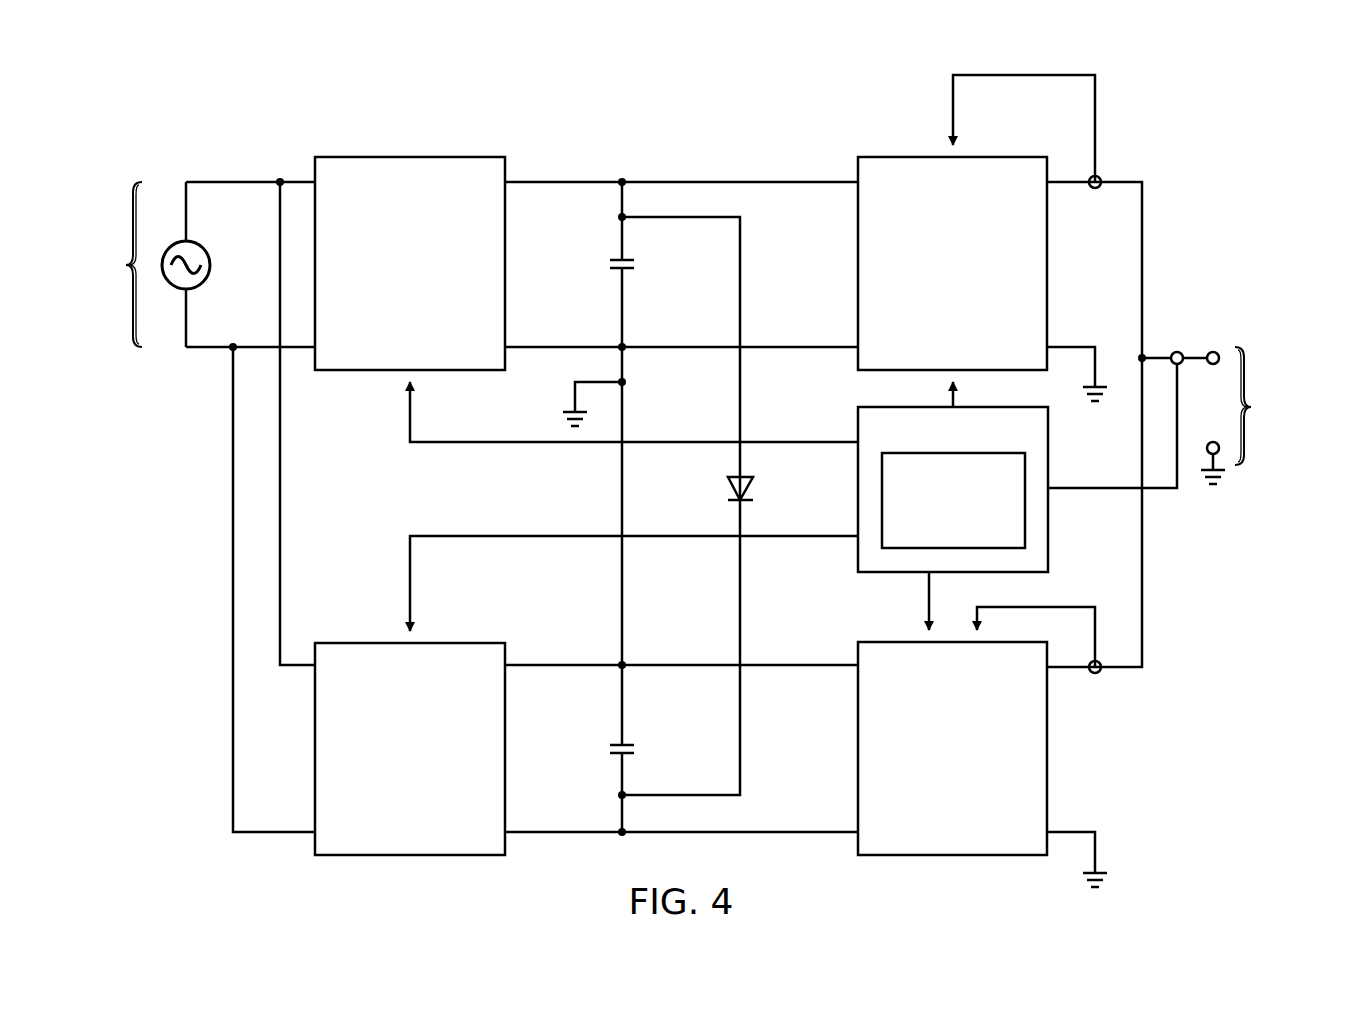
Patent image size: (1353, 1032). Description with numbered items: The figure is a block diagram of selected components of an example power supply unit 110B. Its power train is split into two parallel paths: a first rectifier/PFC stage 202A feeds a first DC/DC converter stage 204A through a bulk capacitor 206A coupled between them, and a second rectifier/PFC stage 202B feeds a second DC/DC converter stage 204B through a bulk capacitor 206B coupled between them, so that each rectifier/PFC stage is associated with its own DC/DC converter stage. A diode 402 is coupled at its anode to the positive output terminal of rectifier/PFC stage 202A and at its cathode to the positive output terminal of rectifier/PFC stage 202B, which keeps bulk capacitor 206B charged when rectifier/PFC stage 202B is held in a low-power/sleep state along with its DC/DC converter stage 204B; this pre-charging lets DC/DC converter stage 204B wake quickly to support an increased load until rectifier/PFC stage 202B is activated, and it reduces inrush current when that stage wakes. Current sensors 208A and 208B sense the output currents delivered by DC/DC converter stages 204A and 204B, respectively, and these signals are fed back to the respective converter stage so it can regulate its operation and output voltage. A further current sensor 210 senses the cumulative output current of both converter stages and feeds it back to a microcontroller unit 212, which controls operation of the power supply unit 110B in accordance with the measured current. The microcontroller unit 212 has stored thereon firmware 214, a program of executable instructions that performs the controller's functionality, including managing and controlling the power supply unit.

The power supply unit 110B is at (840, 90).
The rectifier/PFC stage 202A is at (375, 157).
The rectifier/PFC stage 202B is at (375, 855).
The DC/DC converter stage 204A is at (1000, 157).
The DC/DC converter stage 204B is at (988, 855).
The bulk capacitor 206A is at (610, 265).
The bulk capacitor 206B is at (610, 750).
The current sensor 208A is at (1100, 177).
The current sensor 208B is at (1099, 673).
The current sensor 210 is at (1180, 352).
The microcontroller unit 212 is at (1048, 510).
The firmware 214 is at (930, 535).
The diode 402 is at (728, 488).